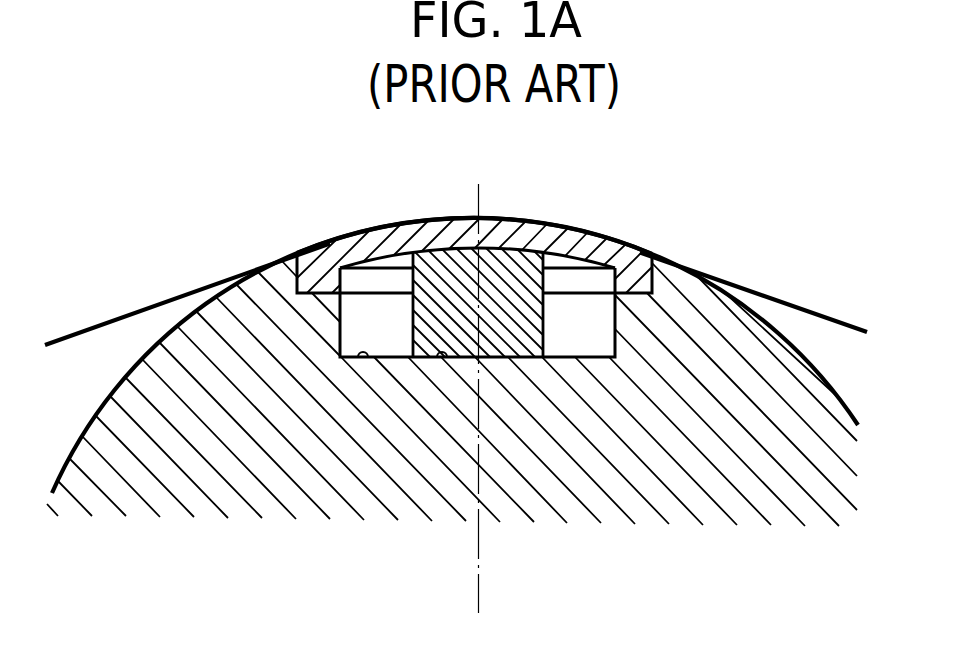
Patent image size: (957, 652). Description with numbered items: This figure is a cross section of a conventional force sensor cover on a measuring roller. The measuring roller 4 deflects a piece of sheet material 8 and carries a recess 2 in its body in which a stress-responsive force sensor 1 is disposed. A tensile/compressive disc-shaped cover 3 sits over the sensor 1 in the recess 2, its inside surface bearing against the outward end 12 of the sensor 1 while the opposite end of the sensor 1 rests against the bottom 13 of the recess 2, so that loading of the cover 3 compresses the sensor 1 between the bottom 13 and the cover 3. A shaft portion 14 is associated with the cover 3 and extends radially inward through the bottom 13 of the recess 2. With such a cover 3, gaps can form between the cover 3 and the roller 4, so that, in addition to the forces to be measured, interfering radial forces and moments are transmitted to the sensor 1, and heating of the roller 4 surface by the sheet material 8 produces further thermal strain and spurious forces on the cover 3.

The force sensor 1 is at (422, 219).
The recess 2 is at (575, 330).
The tensile/compressive disc-shaped cover 3 is at (527, 234).
The measuring roller 4 is at (207, 472).
The sheet material 8 is at (178, 295).
The end of the stress-responsive sensor 12 is at (431, 286).
The bottom of the recess 13 is at (365, 358).
The shaft portion 14 is at (445, 358).